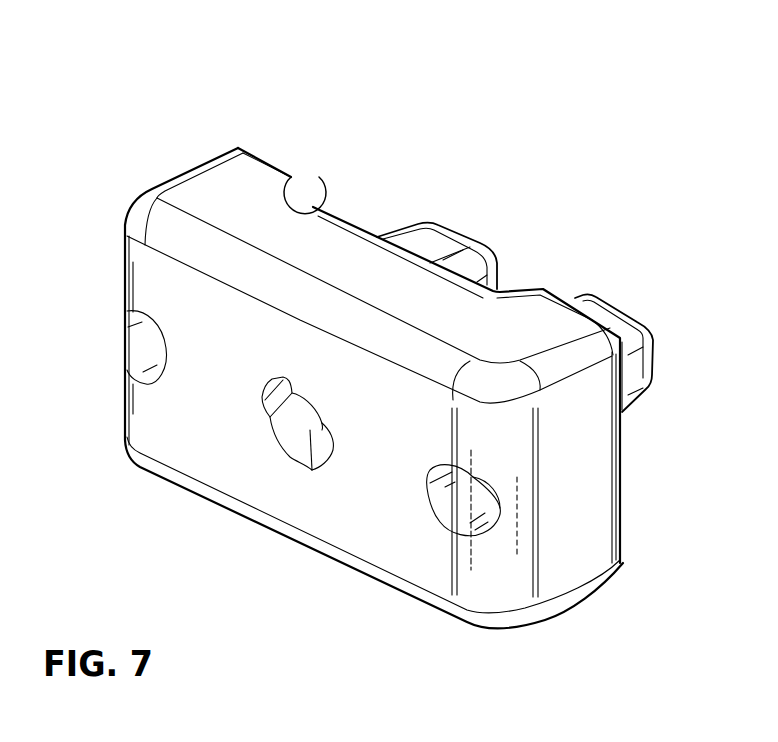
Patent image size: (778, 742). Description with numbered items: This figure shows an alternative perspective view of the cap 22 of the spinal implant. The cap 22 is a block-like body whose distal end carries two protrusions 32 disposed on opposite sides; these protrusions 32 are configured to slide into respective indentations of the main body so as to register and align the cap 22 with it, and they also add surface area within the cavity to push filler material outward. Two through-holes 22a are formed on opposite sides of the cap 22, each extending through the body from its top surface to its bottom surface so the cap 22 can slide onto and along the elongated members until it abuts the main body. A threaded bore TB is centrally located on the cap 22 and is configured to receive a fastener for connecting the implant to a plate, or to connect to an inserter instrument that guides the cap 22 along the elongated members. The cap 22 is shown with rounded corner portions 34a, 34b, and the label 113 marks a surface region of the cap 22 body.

The cap 22 is at (232, 95).
The through-hole 22a is at (143, 347).
The protrusion 32 is at (442, 240).
The rounded corner portion 34a is at (498, 578).
The rounded corner portion 34b is at (137, 215).
The body 113 is at (441, 311).
The threaded bore TB is at (293, 425).